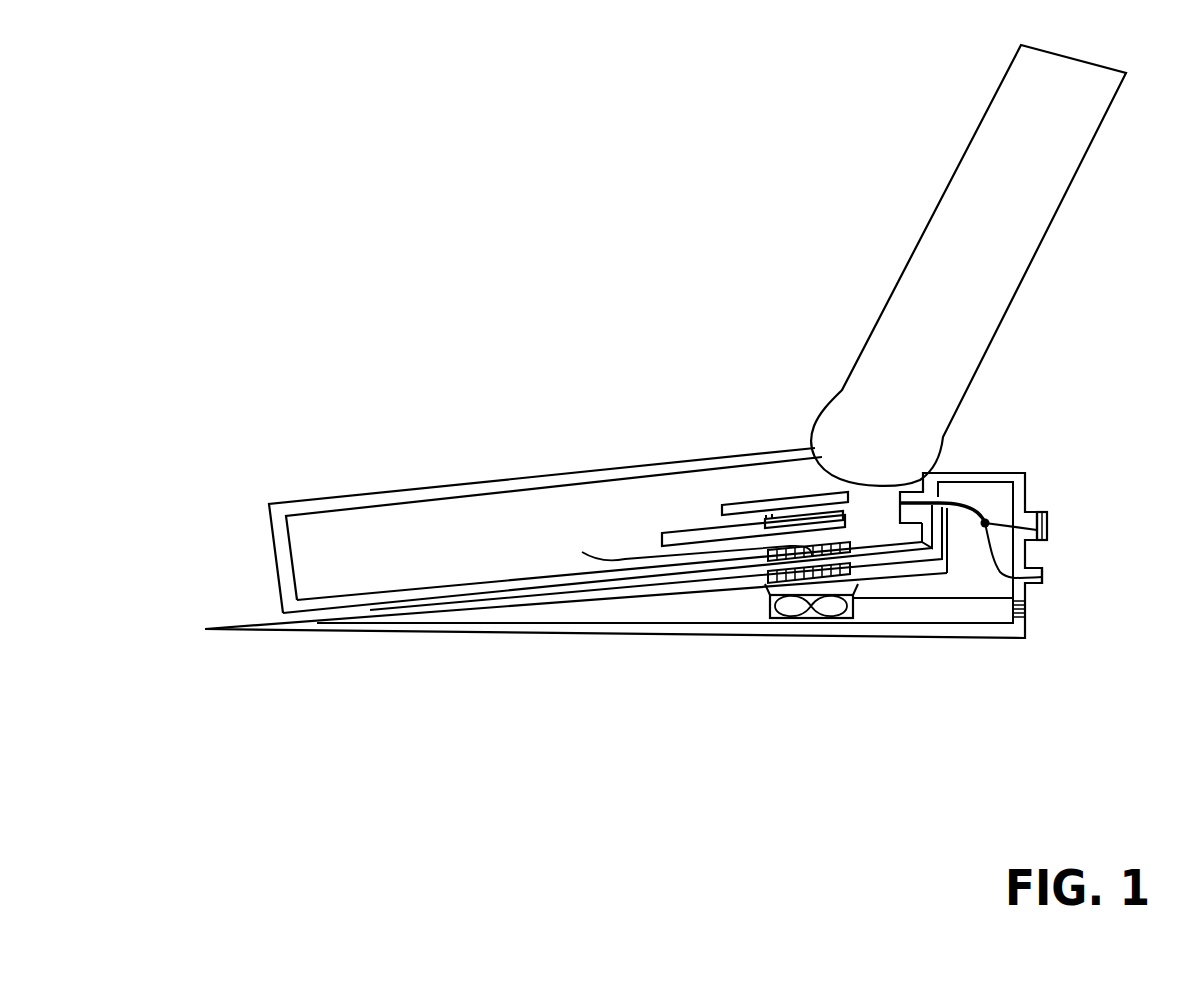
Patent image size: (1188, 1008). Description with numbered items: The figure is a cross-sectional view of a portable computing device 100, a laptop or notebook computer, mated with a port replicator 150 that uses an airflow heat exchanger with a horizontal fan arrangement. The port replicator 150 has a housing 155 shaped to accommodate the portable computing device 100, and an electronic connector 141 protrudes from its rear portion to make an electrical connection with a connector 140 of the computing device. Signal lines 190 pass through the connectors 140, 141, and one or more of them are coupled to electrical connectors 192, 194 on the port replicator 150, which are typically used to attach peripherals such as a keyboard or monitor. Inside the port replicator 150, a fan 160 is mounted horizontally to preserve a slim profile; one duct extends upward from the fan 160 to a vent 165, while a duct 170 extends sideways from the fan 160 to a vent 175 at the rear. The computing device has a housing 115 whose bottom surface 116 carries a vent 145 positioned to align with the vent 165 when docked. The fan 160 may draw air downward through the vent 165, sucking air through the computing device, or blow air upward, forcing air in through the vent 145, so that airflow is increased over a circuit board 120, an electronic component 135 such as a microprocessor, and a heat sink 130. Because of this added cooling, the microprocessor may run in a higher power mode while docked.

The portable computing device 100 is at (768, 423).
The housing 115 is at (430, 497).
The bottom surface 116 is at (477, 582).
The circuit board 120 is at (660, 540).
The heat sink 130 is at (727, 510).
The electronic component 135 is at (782, 516).
The connector 140 is at (888, 504).
The electronic connector 141 is at (913, 490).
The vent 145 is at (671, 552).
The port replicator 150 is at (621, 649).
The housing 155 is at (484, 632).
The fan 160 is at (768, 605).
The vent 165 is at (858, 584).
The duct 170 is at (933, 610).
The vent 175 is at (1027, 610).
The signal lines 190 is at (985, 523).
The electrical connector 192 is at (1050, 520).
The electrical connector 194 is at (1048, 578).